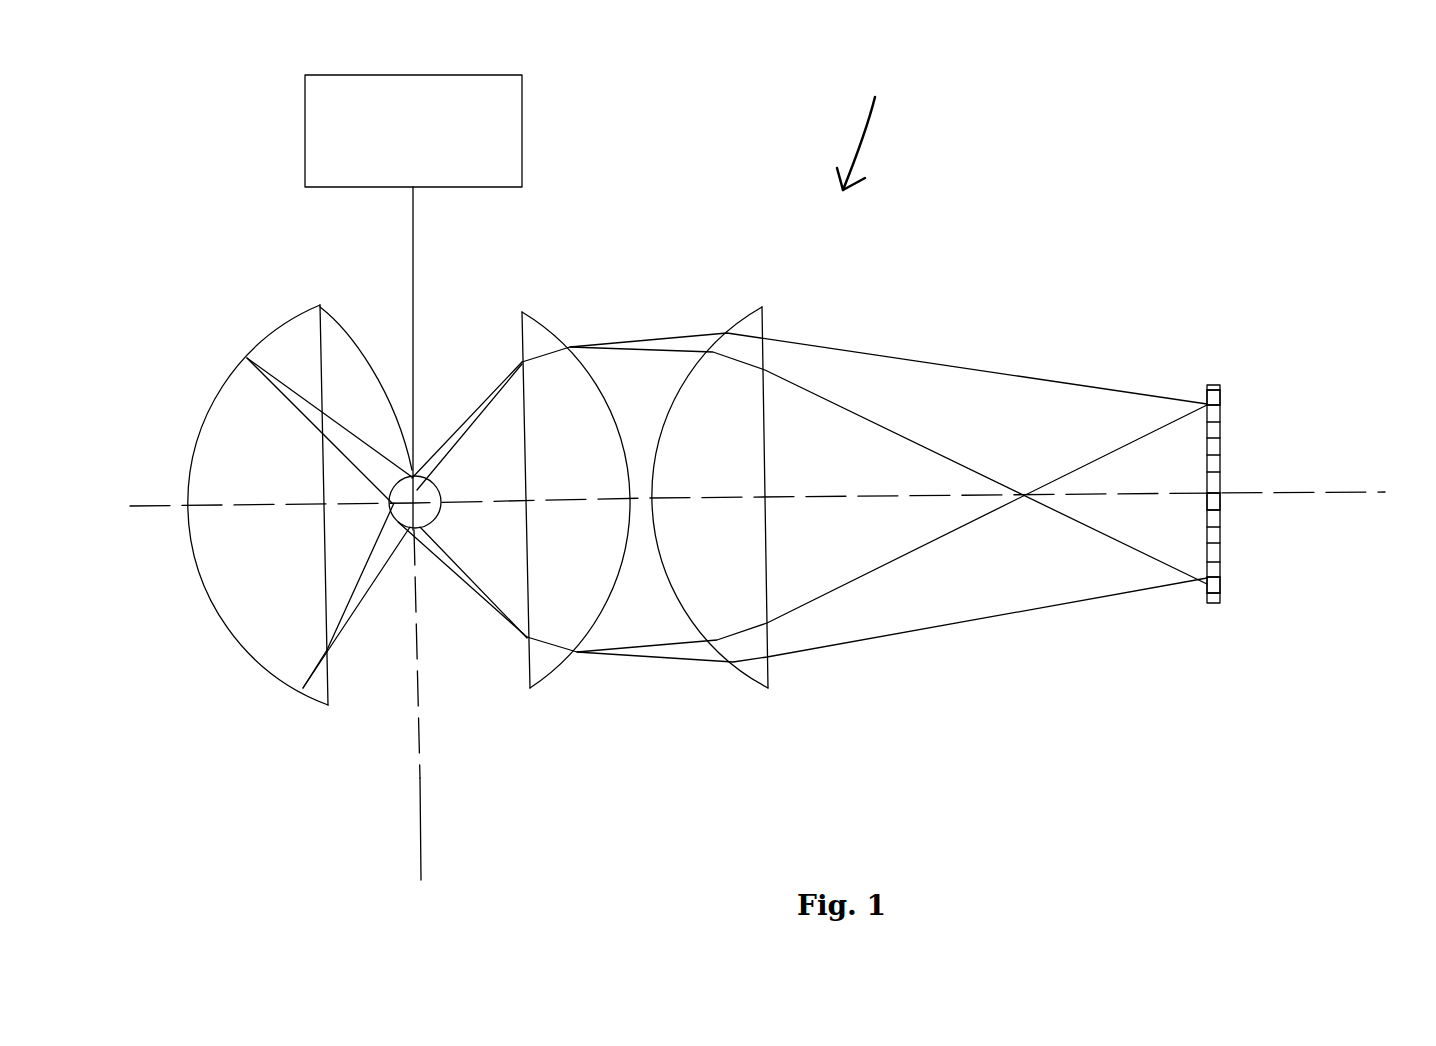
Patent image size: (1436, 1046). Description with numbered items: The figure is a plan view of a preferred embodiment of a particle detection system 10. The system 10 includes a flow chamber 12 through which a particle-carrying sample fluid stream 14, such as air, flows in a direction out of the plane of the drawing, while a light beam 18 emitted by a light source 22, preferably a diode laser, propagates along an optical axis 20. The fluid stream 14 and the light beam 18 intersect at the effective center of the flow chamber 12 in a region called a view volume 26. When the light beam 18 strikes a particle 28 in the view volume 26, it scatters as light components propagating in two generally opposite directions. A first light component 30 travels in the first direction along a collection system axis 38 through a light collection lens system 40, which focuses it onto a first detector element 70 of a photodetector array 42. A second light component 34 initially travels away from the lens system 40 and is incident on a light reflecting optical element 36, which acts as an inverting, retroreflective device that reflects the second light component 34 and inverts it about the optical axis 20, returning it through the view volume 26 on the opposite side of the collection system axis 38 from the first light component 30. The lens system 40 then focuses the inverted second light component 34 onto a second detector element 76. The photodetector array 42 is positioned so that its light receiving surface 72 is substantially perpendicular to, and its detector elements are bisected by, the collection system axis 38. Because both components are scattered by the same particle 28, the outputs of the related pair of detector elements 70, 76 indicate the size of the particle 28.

The particle detection system 10 is at (878, 123).
The flow chamber 12 is at (757, 486).
The sample fluid stream 14 is at (320, 307).
The light beam 18 is at (413, 282).
The optical axis 20 is at (422, 852).
The light source 22 is at (413, 131).
The view volume 26 is at (388, 513).
The particle 28 is at (417, 458).
The first light component 30 is at (461, 432).
The second light component 34 is at (357, 447).
The light reflecting optical element 36 is at (258, 505).
The collection system axis 38 is at (876, 505).
The light collection lens system 40 is at (503, 303).
The photodetector array 42 is at (1212, 385).
The first detector element 70 is at (1220, 400).
The light receiving surface 72 is at (1210, 513).
The second detector element 76 is at (1222, 585).